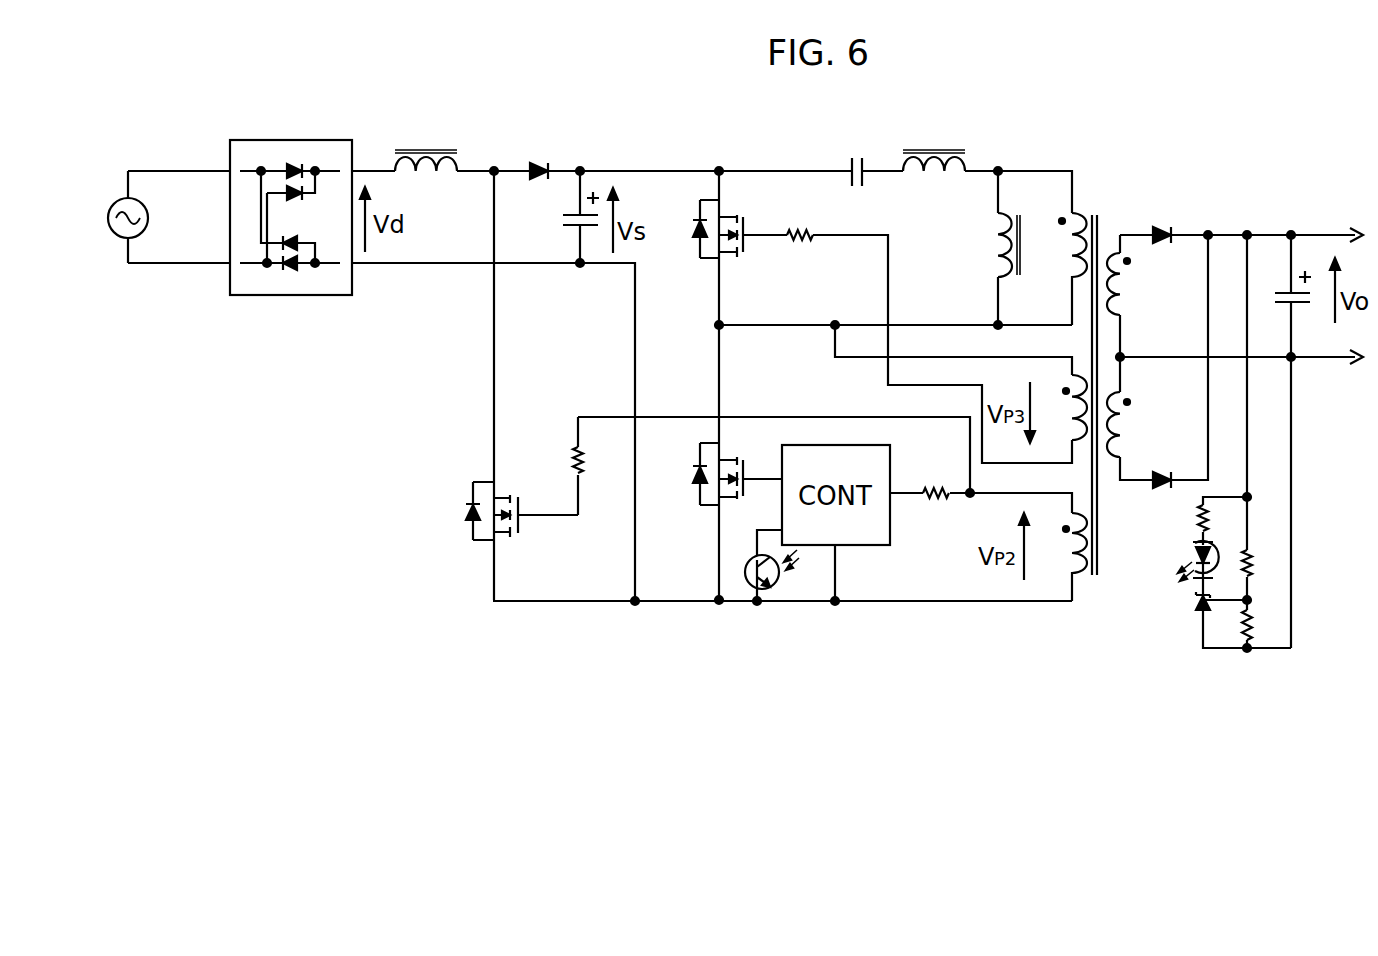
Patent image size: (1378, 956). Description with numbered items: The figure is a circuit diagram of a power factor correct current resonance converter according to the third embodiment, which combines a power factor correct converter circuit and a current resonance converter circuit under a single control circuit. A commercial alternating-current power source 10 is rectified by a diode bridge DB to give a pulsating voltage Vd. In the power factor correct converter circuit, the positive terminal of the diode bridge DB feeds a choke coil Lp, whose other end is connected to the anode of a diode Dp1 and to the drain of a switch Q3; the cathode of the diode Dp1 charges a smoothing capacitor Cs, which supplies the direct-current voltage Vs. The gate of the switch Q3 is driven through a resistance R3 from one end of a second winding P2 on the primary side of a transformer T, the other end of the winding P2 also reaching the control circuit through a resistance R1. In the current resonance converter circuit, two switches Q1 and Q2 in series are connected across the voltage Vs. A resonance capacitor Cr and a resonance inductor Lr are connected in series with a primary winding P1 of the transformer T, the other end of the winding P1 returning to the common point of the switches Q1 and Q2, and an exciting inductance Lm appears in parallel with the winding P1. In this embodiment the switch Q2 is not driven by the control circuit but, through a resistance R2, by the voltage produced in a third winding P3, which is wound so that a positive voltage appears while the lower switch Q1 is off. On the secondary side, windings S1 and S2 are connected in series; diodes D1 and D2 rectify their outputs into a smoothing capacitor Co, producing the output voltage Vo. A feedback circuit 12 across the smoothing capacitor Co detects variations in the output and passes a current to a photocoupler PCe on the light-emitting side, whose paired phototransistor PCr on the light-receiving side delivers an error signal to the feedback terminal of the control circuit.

The commercial alternating-current power source 10 is at (111, 200).
The feedback circuit 12 is at (1248, 443).
The diode bridge DB is at (291, 203).
The choke coil Lp is at (426, 144).
The diode Dp1 is at (541, 153).
The smoothing capacitor Cs is at (567, 217).
The switch Q3 is at (522, 501).
The resistance R3 is at (598, 466).
The switch Q2 is at (740, 219).
The resistance R2 is at (803, 219).
The resonance capacitor Cr is at (855, 156).
The resonance inductor Lr is at (934, 146).
The exciting inductance Lm is at (992, 245).
The winding P1 is at (1062, 269).
The transformer T is at (1094, 376).
The third winding P3 is at (1062, 407).
The resistance R1 is at (939, 479).
The second winding P2 is at (1059, 557).
The switch Q1 is at (737, 465).
The photocoupler on light-receiving side PCr is at (772, 587).
The diode D1 is at (1164, 218).
The winding S1 is at (1133, 284).
The winding S2 is at (1133, 424).
The diode D2 is at (1164, 464).
The smoothing capacitor Co is at (1283, 441).
The photocoupler on light-emitting side PCe is at (1175, 556).